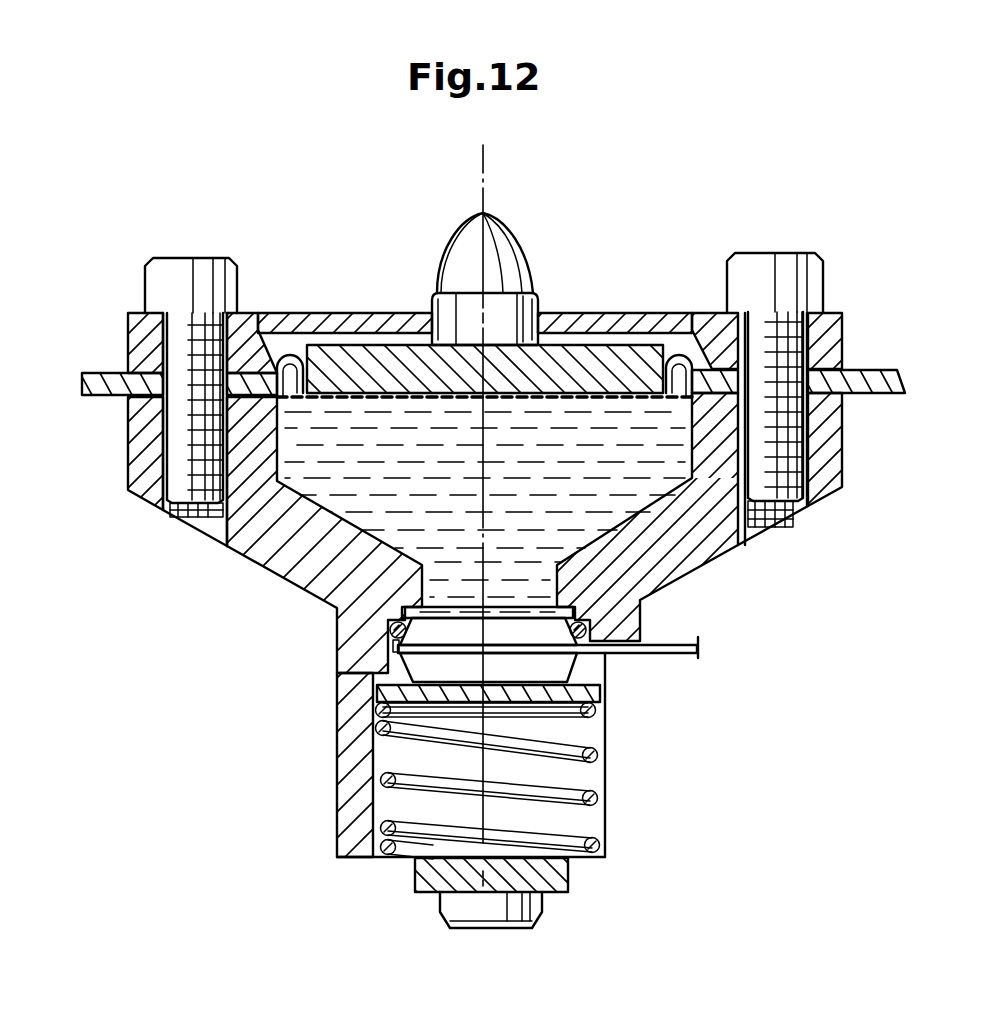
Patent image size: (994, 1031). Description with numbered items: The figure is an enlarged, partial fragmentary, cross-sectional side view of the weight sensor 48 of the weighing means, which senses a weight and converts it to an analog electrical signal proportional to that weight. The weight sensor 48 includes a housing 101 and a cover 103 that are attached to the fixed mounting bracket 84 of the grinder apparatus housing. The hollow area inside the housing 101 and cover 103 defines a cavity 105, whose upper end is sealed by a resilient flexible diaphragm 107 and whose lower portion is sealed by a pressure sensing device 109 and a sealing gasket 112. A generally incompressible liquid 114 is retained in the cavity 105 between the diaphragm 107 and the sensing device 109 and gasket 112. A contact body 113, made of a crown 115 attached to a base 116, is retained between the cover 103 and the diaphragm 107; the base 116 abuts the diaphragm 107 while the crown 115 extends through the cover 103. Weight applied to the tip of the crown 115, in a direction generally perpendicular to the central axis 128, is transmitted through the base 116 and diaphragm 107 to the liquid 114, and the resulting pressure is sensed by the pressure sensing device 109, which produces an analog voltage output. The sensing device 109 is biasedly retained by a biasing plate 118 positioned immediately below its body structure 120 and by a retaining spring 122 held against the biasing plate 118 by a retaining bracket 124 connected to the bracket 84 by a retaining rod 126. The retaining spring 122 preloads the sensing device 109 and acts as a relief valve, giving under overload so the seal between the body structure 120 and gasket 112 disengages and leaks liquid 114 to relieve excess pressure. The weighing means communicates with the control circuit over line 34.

The weight sensor 48 is at (140, 225).
The mounting bracket 84 is at (110, 368).
The housing 101 is at (273, 563).
The cover 103 is at (127, 337).
The cavity 105 is at (653, 492).
The resilient flexible diaphragm 107 is at (634, 365).
The pressure sensing device 109 is at (586, 670).
The sealing gasket 112 is at (387, 631).
The contact body 113 is at (400, 300).
The liquid 114 is at (622, 532).
The crown 115 is at (443, 257).
The base 116 is at (340, 333).
The biasing plate 118 is at (607, 693).
The body structure 120 is at (417, 665).
The retaining spring 122 is at (570, 763).
The retaining bracket 124 is at (573, 875).
The retaining rod 126 is at (447, 922).
The central axis 128 is at (483, 173).
The line 34 is at (693, 646).